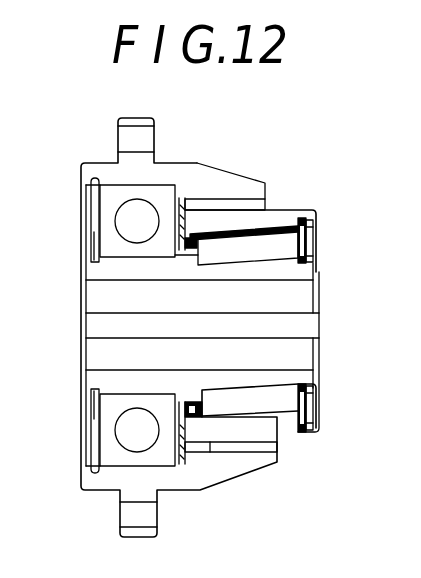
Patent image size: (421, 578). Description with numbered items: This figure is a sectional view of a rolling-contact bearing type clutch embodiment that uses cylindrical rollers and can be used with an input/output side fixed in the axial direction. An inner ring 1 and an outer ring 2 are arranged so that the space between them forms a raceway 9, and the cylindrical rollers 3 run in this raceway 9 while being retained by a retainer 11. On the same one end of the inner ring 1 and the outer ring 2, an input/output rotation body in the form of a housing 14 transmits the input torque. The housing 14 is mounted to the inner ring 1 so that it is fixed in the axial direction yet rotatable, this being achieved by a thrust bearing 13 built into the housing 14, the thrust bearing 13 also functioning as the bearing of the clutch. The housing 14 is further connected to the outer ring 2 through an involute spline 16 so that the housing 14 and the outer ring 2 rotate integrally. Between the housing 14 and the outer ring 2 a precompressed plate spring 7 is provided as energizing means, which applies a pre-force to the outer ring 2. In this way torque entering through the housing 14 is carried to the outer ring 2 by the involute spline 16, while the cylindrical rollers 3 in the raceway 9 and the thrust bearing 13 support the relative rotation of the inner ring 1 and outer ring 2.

The inner ring 1 is at (264, 270).
The outer ring 2 is at (288, 213).
The cylindrical rollers 3 is at (267, 412).
The plate spring 7 is at (206, 208).
The raceway 9 is at (290, 248).
The retainer 11 is at (295, 428).
The thrust bearing 13 is at (148, 212).
The housing 14 is at (100, 170).
The involute spline 16 is at (242, 202).